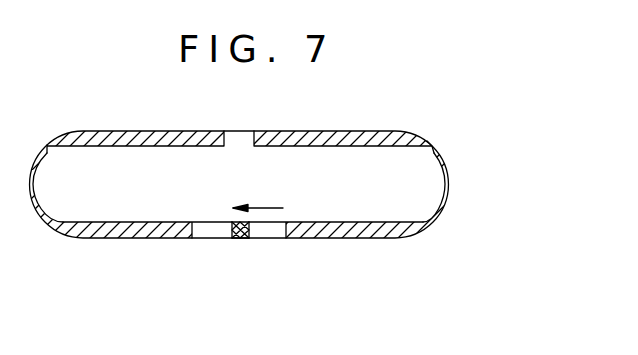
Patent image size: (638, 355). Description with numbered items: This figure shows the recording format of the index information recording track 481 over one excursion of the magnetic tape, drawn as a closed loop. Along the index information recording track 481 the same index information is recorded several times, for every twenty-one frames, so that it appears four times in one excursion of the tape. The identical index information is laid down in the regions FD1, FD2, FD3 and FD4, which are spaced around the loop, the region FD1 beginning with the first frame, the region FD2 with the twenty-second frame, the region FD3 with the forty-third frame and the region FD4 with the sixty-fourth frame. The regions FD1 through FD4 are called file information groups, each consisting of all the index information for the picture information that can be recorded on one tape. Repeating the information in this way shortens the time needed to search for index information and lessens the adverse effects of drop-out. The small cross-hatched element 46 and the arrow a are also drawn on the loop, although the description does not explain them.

The index information recording track 481 is at (449, 184).
The file information group region FD1 is at (348, 240).
The file information group region FD2 is at (371, 131).
The file information group region FD3 is at (138, 131).
The file information group region FD4 is at (98, 240).
The cross-hatched element 46 is at (240, 240).
The direction of movement a is at (258, 195).